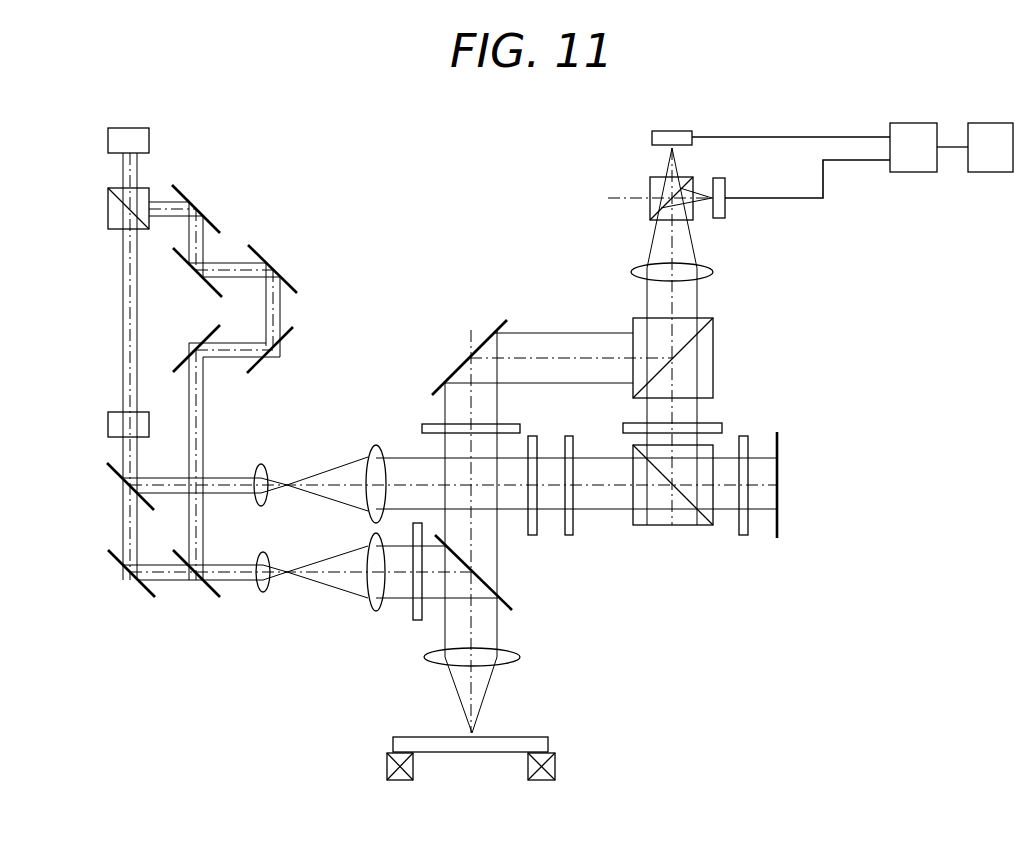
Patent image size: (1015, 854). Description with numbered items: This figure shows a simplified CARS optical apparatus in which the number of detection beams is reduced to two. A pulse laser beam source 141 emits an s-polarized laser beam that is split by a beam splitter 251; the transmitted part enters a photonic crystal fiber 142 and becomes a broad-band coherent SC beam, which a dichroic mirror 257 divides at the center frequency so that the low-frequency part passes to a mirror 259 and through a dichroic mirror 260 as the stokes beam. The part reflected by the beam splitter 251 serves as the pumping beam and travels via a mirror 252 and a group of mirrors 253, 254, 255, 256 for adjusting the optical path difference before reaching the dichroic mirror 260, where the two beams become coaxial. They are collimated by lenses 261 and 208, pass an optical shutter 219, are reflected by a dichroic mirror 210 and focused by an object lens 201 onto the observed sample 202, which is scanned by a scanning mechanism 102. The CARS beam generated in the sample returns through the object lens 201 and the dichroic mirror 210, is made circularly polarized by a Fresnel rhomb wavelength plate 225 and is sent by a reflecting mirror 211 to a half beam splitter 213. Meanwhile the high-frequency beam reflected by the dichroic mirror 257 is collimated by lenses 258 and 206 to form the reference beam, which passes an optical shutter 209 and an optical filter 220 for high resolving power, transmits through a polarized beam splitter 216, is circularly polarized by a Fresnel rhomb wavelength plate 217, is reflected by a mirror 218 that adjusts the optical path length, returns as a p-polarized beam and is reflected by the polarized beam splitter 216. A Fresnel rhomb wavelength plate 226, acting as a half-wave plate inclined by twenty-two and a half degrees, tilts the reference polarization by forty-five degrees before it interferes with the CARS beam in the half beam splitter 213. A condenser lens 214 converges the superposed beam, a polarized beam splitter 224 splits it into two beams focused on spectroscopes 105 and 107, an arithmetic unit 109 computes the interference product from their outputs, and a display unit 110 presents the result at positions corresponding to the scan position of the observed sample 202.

The pulse laser beam source 141 is at (133, 128).
The photonic crystal fiber 142 is at (108, 422).
The beam splitter 251 is at (108, 195).
The mirror 252 is at (199, 206).
The mirror 253 is at (197, 277).
The mirror 254 is at (277, 263).
The mirror 255 is at (273, 355).
The mirror 256 is at (192, 353).
The dichroic mirror 257 is at (112, 480).
The lens 258 is at (260, 464).
The mirror 259 is at (118, 574).
The dichroic mirror 260 is at (208, 598).
The lens 261 is at (264, 594).
The lens 206 is at (370, 447).
The lens 208 is at (368, 538).
The optical shutter 219 is at (412, 625).
The dichroic mirror 210 is at (513, 608).
The Fresnel rhomb wavelength plate 225 is at (422, 425).
The reflecting mirror 211 is at (465, 363).
The optical shutter 209 is at (532, 435).
The optical filter 220 is at (568, 537).
The polarized beam splitter 216 is at (678, 527).
The Fresnel rhomb wavelength plate 217 is at (743, 537).
The mirror 218 is at (780, 520).
The Fresnel rhomb wavelength plate 226 is at (722, 424).
The half beam splitter 213 is at (632, 325).
The condenser lens 214 is at (634, 271).
The polarized beam splitter 224 is at (650, 185).
The spectroscope 105 is at (674, 130).
The spectroscope 107 is at (727, 188).
The arithmetic unit 109 is at (918, 122).
The display unit 110 is at (997, 122).
The object lens 201 is at (432, 663).
The observed sample 202 is at (521, 737).
The scanning mechanism 102 is at (556, 766).